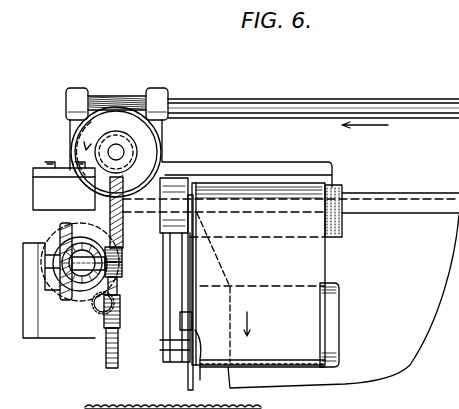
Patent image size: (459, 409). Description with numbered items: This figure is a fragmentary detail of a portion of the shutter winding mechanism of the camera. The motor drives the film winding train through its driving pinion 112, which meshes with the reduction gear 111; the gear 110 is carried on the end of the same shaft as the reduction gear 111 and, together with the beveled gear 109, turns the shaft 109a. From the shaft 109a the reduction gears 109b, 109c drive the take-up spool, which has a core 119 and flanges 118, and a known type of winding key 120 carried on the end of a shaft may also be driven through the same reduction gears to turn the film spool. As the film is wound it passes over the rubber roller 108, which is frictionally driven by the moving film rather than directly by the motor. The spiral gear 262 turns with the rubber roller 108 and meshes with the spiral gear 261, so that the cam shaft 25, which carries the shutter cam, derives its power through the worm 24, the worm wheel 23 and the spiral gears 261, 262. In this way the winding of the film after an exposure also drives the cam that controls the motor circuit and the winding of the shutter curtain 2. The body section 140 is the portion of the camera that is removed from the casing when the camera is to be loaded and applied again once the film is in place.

The curtain 2 is at (291, 124).
The worm wheel 23 is at (80, 138).
The worm 24 is at (124, 95).
The cam shaft 25 is at (243, 100).
The rubber roller 108 is at (342, 235).
The beveled gear 109 is at (60, 240).
The shaft 109a is at (122, 274).
The reduction gear 109b is at (122, 258).
The reduction gear 109c is at (121, 300).
The gear 110 is at (82, 270).
The reduction gear 111 is at (80, 312).
The driving pinion 112 is at (100, 314).
The flange 118 is at (186, 382).
The spool core 119 is at (327, 301).
The winding key 120 is at (198, 372).
The body section 140 is at (104, 404).
The spiral gear 261 is at (137, 150).
The spiral gear 262 is at (110, 208).